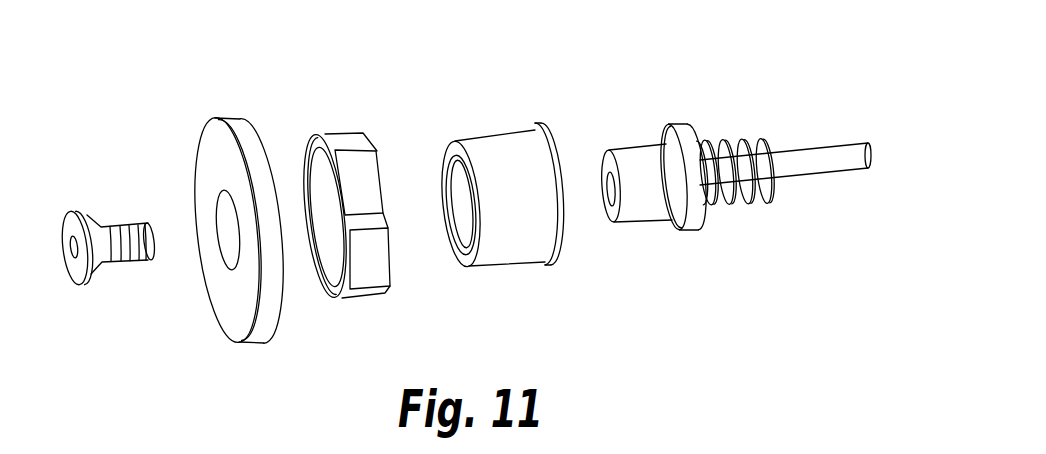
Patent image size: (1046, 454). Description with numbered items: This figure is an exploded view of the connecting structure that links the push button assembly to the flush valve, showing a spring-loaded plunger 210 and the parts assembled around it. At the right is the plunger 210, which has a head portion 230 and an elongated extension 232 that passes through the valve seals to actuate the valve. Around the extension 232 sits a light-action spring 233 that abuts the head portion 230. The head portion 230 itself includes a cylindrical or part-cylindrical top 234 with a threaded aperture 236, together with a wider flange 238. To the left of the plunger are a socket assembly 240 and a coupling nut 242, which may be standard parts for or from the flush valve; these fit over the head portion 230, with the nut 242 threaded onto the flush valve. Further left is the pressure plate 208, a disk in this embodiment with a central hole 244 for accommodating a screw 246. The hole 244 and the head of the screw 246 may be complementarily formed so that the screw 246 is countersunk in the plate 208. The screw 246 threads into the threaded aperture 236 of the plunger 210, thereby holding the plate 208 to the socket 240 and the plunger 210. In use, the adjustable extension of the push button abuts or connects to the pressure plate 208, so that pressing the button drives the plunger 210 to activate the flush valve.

The pressure plate 208 is at (235, 125).
The plunger 210 is at (730, 97).
The head portion 230 is at (688, 262).
The elongated extension 232 is at (823, 158).
The light-action spring 233 is at (762, 198).
The top 234 is at (635, 165).
The threaded aperture 236 is at (612, 186).
The flange 238 is at (680, 145).
The socket assembly 240 is at (530, 240).
The coupling nut 242 is at (372, 277).
The central hole 244 is at (227, 232).
The screw 246 is at (108, 240).